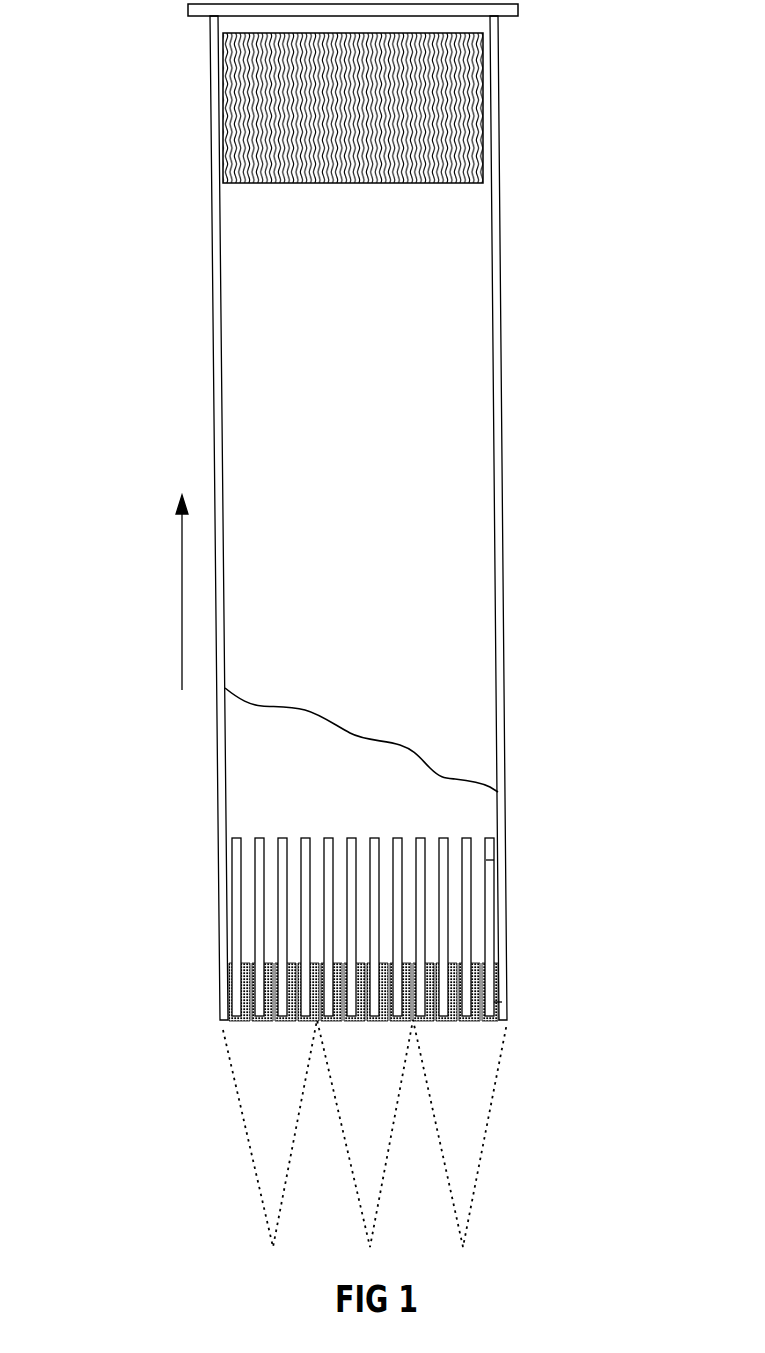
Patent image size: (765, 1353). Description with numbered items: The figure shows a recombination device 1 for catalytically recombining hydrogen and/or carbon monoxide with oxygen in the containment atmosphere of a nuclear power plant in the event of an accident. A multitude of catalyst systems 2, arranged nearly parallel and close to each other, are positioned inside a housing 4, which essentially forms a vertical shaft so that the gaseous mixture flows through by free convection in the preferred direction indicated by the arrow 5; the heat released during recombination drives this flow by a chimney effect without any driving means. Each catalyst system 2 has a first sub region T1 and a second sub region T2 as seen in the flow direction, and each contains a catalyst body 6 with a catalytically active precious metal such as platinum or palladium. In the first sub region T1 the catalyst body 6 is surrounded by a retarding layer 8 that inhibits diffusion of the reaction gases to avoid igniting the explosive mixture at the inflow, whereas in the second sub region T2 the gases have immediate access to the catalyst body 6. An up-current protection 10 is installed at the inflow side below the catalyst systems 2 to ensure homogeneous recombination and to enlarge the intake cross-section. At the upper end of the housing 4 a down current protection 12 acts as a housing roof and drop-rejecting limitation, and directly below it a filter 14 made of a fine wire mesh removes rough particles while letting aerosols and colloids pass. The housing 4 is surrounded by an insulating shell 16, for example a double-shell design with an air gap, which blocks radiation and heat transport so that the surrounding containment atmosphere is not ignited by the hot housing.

The recombination device 1 is at (354, 623).
The catalyst system 2 is at (377, 929).
The housing 4 is at (353, 518).
The arrow 5 is at (183, 603).
The catalyst body 6 is at (490, 917).
The retarding layer 8 is at (498, 975).
The up-current protection 10 is at (487, 1135).
The down current protection 12 is at (508, 10).
The filter 14 is at (460, 105).
The insulating shell 16 is at (215, 388).
The first sub region T1 is at (502, 1002).
The second sub region T2 is at (493, 862).